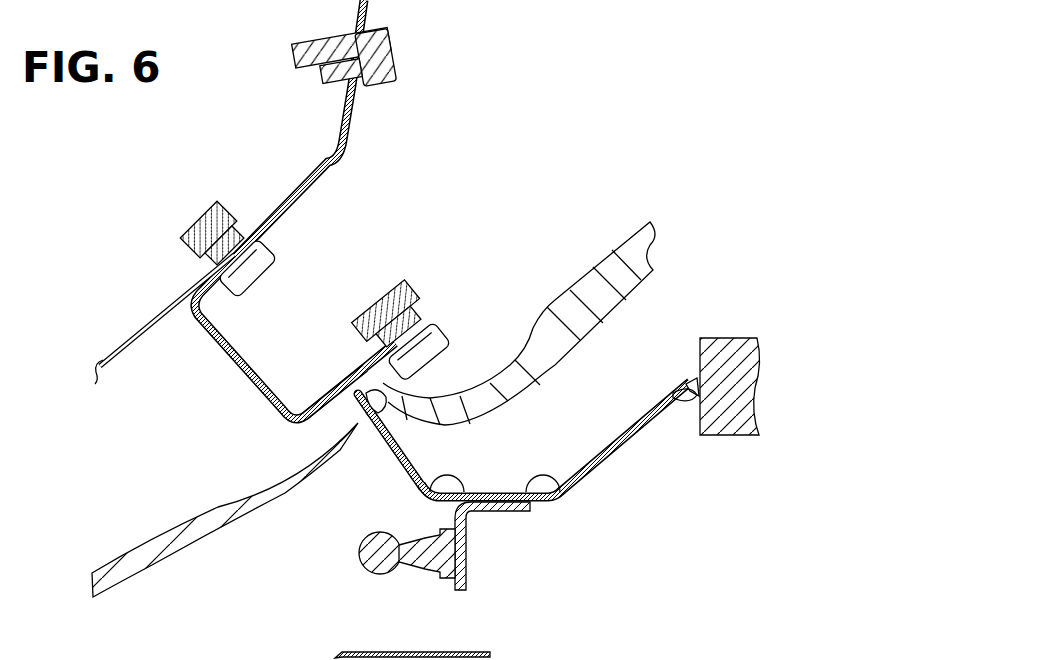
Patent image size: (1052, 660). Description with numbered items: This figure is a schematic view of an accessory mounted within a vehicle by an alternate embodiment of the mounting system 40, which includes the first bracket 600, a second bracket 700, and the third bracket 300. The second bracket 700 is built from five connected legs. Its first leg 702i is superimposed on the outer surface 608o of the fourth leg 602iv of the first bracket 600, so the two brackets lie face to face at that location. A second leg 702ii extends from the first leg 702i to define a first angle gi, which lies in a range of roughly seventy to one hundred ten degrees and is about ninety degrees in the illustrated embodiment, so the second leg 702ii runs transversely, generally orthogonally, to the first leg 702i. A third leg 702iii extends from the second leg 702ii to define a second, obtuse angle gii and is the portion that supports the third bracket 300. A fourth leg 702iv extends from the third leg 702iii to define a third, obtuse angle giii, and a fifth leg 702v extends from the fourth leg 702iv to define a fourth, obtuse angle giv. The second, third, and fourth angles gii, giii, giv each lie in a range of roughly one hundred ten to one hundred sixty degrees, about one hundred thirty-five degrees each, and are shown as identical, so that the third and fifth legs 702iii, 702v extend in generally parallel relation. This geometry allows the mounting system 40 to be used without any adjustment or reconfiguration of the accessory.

The mounting system 40 is at (578, 84).
The first bracket 600 is at (296, 298).
The fourth leg 602iv is at (320, 398).
The outer surface 608o is at (334, 406).
The second bracket 700 is at (534, 428).
The first leg 702i is at (380, 387).
The second leg 702ii is at (390, 456).
The third leg 702iii is at (497, 480).
The fourth leg 702iv is at (612, 466).
The fifth leg 702v is at (684, 372).
The first angle gi is at (388, 407).
The second angle gii is at (462, 482).
The third angle giii is at (528, 484).
The fourth angle giv is at (680, 400).
The third bracket 300 is at (518, 562).